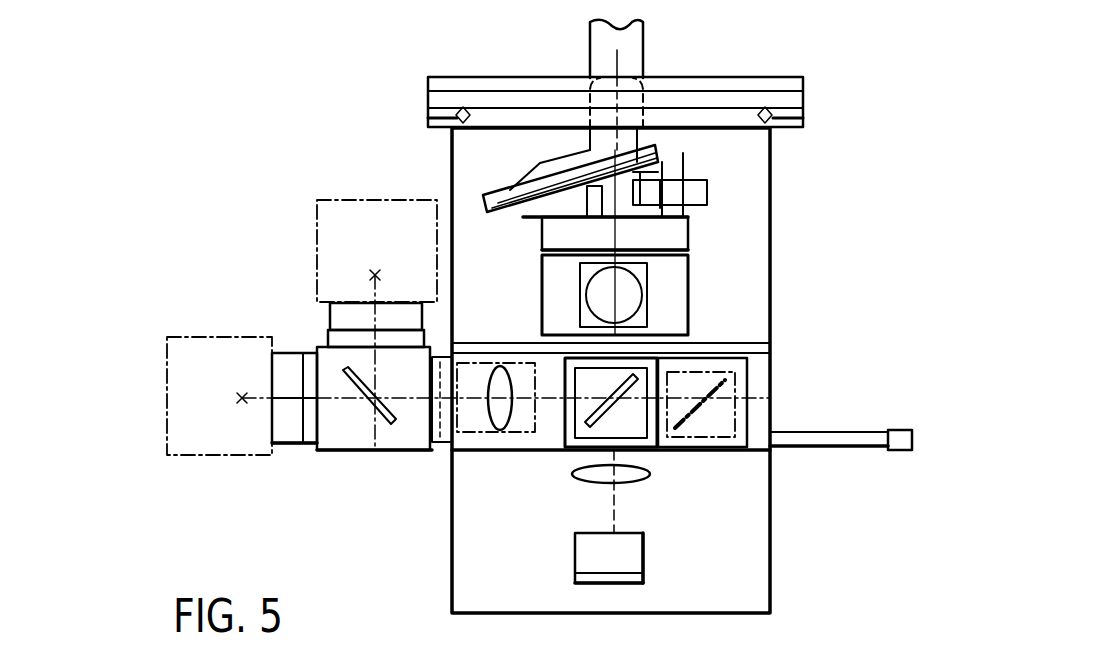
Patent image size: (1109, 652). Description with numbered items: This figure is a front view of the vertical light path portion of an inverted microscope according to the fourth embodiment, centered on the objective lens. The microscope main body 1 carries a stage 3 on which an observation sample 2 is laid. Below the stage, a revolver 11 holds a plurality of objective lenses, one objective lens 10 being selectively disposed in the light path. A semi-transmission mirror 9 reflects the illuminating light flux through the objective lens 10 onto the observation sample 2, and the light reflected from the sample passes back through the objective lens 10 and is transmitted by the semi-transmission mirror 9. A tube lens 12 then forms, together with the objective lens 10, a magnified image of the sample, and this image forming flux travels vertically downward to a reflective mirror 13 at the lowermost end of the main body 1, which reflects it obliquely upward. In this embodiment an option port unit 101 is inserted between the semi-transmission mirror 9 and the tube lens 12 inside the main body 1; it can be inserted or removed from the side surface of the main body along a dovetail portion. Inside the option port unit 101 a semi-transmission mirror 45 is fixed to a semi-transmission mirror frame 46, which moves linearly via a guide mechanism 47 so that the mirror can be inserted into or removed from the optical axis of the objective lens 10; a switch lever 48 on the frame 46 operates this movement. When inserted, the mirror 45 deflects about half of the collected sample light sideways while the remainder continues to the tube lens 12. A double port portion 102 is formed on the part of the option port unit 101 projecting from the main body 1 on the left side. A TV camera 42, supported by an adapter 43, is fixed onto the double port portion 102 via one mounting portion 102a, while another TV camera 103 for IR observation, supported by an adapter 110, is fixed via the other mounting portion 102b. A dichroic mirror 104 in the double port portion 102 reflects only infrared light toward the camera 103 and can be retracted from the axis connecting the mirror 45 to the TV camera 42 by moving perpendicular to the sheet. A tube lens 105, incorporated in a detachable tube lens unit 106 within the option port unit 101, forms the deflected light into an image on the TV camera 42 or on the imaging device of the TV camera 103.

The microscope main body 1 is at (770, 555).
The observation sample 2 is at (637, 42).
The stage 3 is at (792, 82).
The semi-transmission mirror 9 is at (640, 320).
The objective lens 10 is at (635, 134).
The revolver 11 is at (500, 194).
The tube lens 12 is at (630, 478).
The reflective mirror 13 is at (632, 558).
The TV camera 42 is at (205, 457).
The adapter 43 is at (282, 447).
The semi-transmission mirror 45 is at (717, 382).
The semi-transmission mirror frame 46 is at (637, 425).
The guide mechanism 47 is at (575, 447).
The switch lever 48 is at (897, 452).
The option port unit 101 is at (548, 454).
The double port portion 102 is at (337, 450).
The mounting portion 102a is at (303, 447).
The mounting portion 102b is at (330, 340).
The TV camera 103 is at (323, 218).
The dichroic mirror 104 is at (388, 422).
The tube lens 105 is at (500, 430).
The tube lens unit 106 is at (470, 440).
The adapter 110 is at (340, 300).